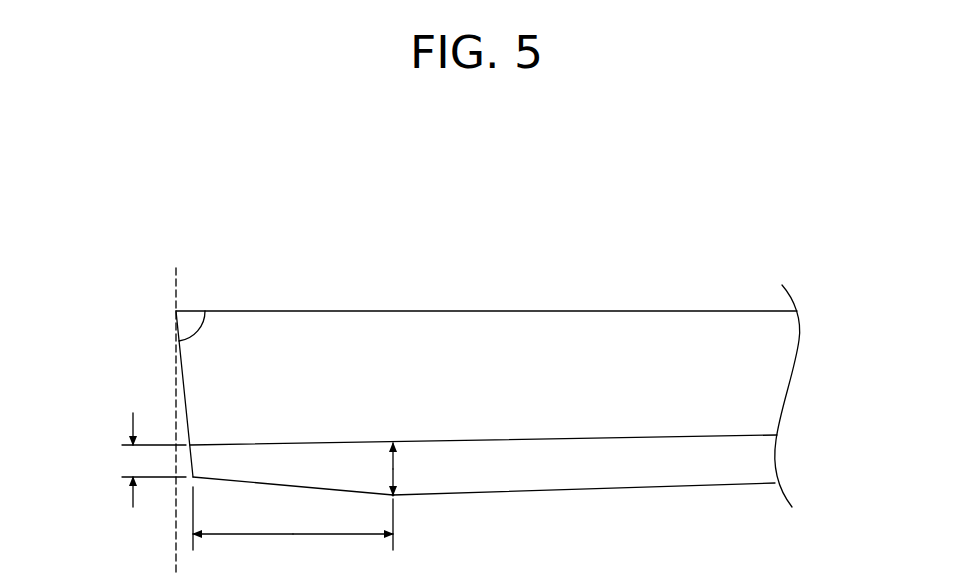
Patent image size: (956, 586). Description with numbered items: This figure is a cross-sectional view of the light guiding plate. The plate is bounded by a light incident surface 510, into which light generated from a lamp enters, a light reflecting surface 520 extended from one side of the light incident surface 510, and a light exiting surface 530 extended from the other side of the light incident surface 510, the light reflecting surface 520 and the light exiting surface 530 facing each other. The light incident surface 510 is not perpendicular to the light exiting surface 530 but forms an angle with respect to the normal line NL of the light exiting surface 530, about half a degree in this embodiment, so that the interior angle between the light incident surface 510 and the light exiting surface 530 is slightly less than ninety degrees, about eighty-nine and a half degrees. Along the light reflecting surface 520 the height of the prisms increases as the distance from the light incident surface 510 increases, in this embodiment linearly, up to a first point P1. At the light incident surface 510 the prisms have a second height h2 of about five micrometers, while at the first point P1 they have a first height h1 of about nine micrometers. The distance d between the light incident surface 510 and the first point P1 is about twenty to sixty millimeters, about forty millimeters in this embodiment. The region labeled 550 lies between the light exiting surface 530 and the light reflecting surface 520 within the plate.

The light incident surface 510 is at (182, 388).
The light reflecting surface 520 is at (493, 493).
The light exiting surface 530 is at (452, 311).
The lower layer portion of light guide plate 550 is at (582, 473).
The first point P1 is at (393, 495).
The normal line NL is at (177, 408).
The first height h1 is at (409, 469).
The second height h2 is at (142, 460).
The distance d from side wall to bend point d is at (293, 525).